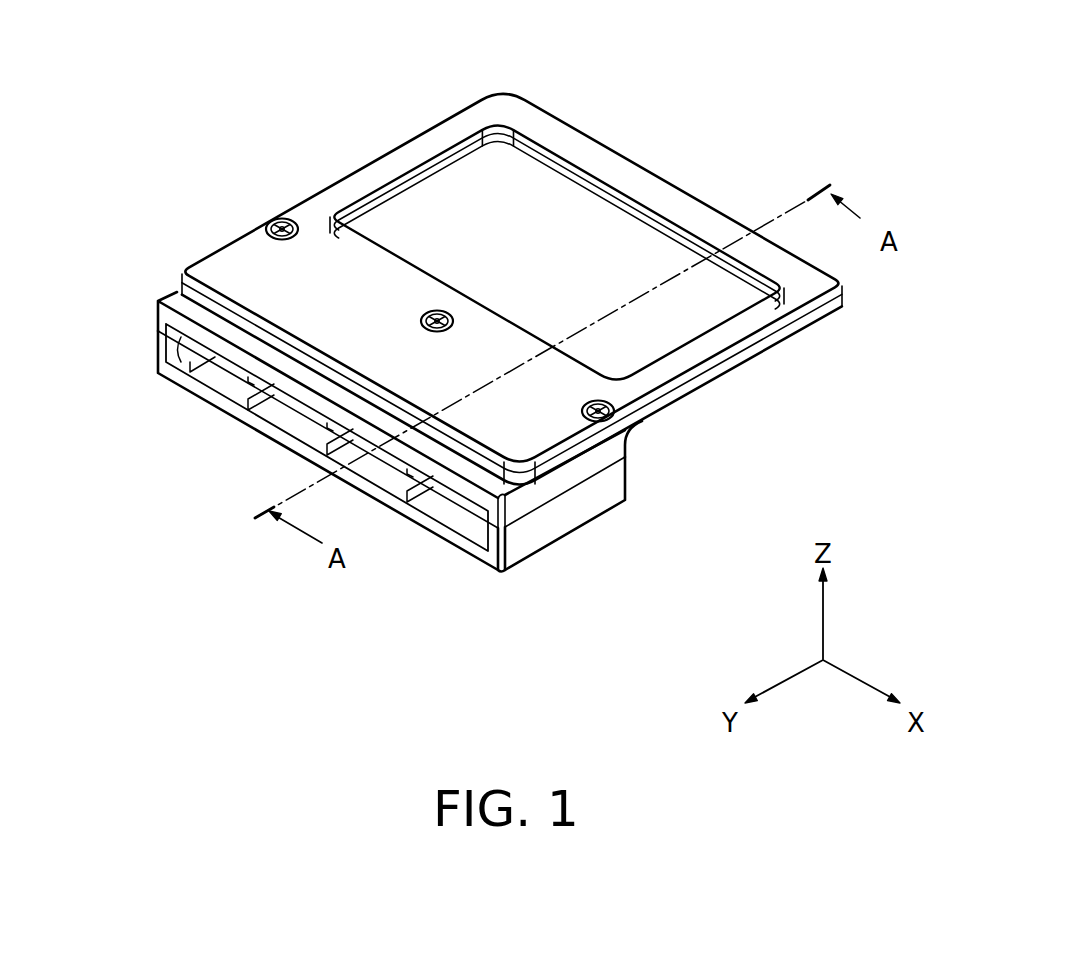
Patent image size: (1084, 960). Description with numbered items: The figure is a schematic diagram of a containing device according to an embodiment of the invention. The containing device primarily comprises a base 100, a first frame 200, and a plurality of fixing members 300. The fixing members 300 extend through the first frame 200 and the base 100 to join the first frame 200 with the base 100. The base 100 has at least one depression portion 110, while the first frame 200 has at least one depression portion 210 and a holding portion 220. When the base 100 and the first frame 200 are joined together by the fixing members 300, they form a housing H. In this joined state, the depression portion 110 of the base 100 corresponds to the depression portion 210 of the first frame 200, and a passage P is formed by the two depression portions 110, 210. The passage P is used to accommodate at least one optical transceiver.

The base 100 is at (424, 448).
The depression portion 110 is at (207, 388).
The first frame 200 is at (387, 410).
The depression portion 210 is at (174, 352).
The holding portion 220 is at (501, 113).
The fixing members 300 is at (280, 221).
The passage P is at (234, 395).
The housing H is at (708, 437).